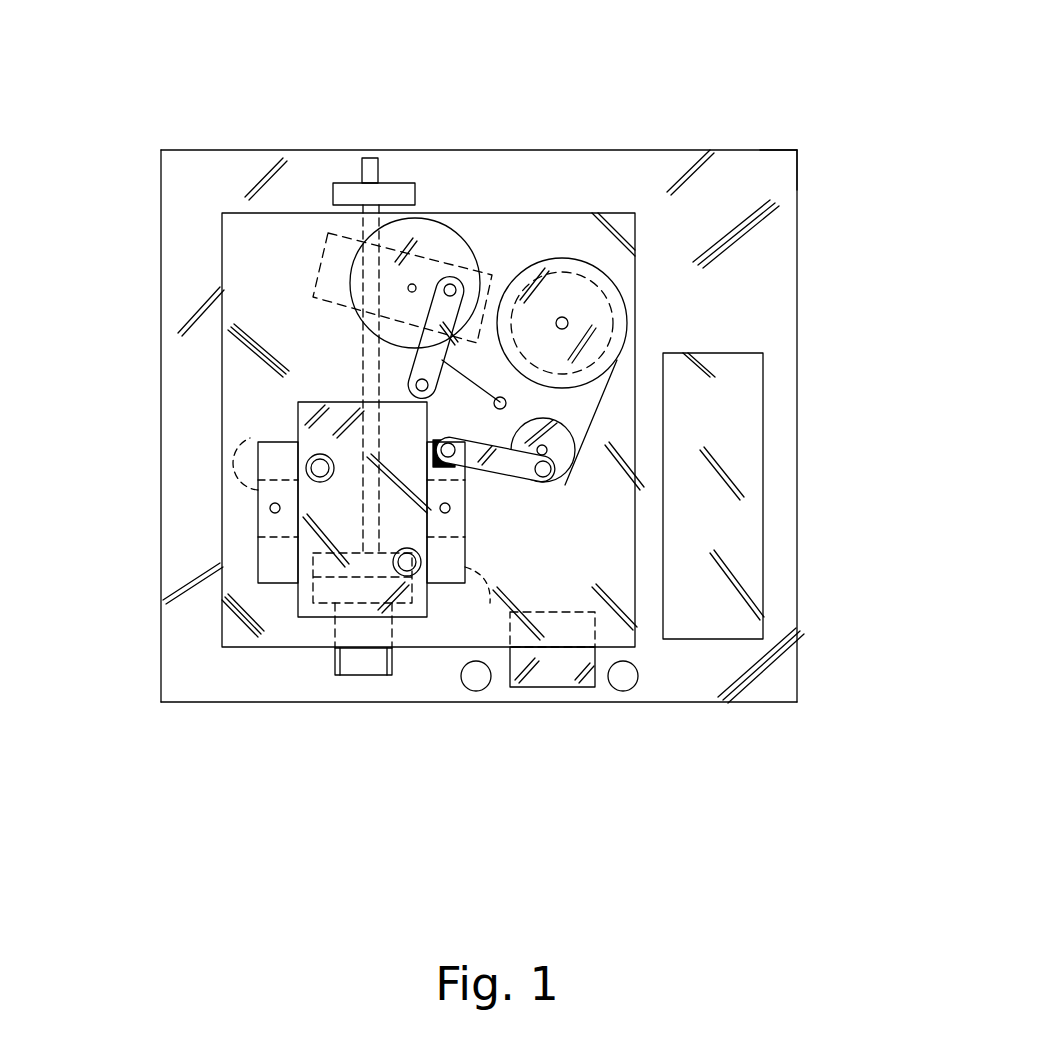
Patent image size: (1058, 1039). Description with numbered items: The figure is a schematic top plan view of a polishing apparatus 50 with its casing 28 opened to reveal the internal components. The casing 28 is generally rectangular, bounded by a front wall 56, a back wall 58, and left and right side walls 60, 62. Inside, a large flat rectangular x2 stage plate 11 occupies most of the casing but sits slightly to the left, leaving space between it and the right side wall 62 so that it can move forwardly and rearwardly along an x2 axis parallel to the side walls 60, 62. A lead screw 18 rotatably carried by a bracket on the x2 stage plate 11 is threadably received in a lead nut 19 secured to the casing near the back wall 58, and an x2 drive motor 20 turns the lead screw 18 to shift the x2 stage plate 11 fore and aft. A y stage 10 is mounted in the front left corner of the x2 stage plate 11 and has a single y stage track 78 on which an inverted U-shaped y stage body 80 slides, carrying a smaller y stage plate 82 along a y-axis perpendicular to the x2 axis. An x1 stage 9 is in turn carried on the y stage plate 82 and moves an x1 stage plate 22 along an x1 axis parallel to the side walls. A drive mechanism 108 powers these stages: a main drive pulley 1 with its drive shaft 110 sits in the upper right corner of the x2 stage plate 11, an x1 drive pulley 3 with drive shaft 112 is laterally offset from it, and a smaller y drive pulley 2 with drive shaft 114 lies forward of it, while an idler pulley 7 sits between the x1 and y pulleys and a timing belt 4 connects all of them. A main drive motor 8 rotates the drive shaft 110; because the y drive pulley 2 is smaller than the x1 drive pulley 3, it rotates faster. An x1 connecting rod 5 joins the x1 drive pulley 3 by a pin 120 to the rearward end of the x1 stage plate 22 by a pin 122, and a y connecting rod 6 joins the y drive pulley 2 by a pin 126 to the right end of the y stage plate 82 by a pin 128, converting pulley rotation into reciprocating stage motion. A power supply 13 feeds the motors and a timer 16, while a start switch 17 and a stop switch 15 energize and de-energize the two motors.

The main drive pulley 1 is at (558, 287).
The y drive pulley 2 is at (563, 443).
The x1 drive pulley 3 is at (420, 232).
The timing belt 4 is at (487, 237).
The x1 connecting rod 5 is at (433, 313).
The y connecting rod 6 is at (500, 403).
The idler pulley 7 is at (506, 402).
The main drive motor 8 is at (313, 297).
The x1 stage 9 is at (290, 394).
The y stage 10 is at (250, 528).
The x2 stage plate 11 is at (220, 647).
The power supply 13 is at (765, 555).
The stop switch 15 is at (473, 680).
The timer 16 is at (530, 687).
The start switch 17 is at (638, 676).
The lead screw 18 is at (368, 157).
The lead nut 19 is at (397, 182).
The x2 drive motor 20 is at (330, 598).
The x1 stage plate 22 is at (355, 533).
The casing 28 is at (797, 150).
The polishing apparatus 50 is at (498, 427).
The front wall 56 is at (688, 702).
The back wall 58 is at (575, 150).
The left side wall 60 is at (161, 440).
The right side wall 62 is at (797, 320).
The y stage track 78 is at (248, 449).
The y stage body 80 is at (547, 615).
The y stage plate 82 is at (273, 562).
The drive mechanism 108 is at (605, 243).
The drive shaft 110 is at (568, 323).
The drive shaft 112 is at (414, 284).
The drive shaft 114 is at (545, 455).
The pin 120 is at (456, 286).
The pin 122 is at (437, 387).
The pin 126 is at (541, 482).
The pin 128 is at (455, 457).